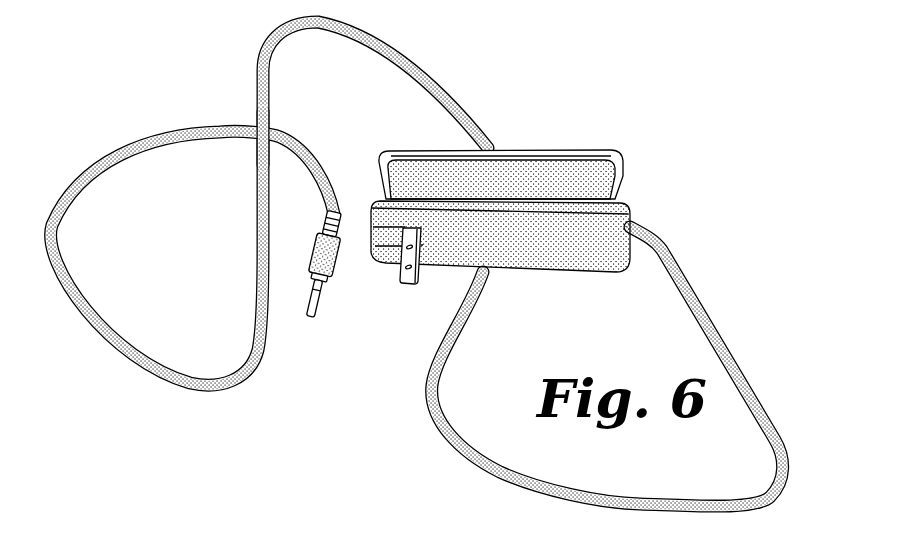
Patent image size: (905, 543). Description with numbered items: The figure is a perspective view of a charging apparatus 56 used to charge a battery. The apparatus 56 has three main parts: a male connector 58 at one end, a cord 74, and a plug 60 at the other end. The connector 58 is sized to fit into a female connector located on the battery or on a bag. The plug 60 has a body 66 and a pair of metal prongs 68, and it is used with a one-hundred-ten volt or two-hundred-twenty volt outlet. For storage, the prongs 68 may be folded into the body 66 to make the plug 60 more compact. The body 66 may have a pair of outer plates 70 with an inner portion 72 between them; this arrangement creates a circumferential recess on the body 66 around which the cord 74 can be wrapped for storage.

The charging apparatus 56 is at (428, 264).
The connector 58 is at (305, 324).
The plug 60 is at (508, 233).
The body 66 is at (543, 164).
The metal prongs 68 is at (408, 284).
The outer plates 70 is at (620, 153).
The inner portion 72 is at (621, 174).
The cord 74 is at (737, 361).